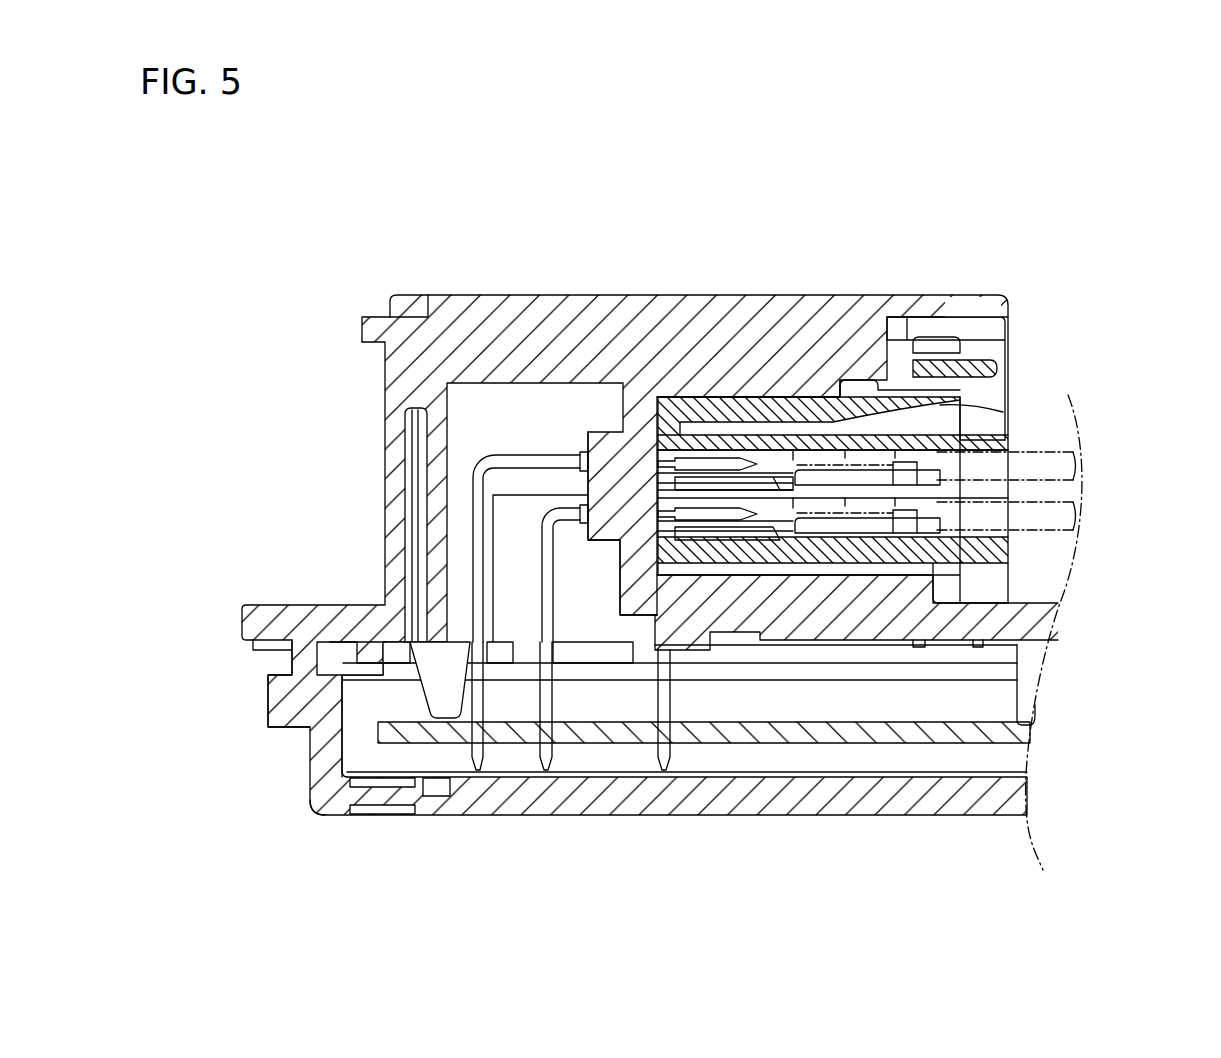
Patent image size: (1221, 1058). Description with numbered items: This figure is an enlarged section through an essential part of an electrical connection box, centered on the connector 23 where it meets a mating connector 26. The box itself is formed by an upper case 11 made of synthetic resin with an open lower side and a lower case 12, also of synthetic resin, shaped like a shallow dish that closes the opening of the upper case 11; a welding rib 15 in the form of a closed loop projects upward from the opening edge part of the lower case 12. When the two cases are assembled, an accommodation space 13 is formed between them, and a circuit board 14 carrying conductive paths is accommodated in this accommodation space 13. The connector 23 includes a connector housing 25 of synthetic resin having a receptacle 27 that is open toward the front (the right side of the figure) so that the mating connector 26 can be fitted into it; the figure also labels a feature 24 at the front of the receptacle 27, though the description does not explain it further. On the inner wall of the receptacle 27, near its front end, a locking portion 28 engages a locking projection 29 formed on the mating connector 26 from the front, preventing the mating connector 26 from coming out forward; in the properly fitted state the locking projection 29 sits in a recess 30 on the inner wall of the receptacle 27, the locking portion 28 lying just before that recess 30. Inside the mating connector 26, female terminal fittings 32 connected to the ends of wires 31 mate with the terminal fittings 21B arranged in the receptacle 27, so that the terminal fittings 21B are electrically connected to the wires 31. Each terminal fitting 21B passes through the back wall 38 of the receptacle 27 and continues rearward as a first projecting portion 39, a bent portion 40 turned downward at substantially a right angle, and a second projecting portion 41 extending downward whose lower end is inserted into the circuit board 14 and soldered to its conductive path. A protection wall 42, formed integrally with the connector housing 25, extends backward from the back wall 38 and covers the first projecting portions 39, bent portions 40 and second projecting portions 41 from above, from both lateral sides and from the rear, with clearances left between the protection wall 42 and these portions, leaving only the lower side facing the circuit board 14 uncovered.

The upper case 11 is at (262, 612).
The lower case 12 is at (878, 800).
The accommodation space 13 is at (352, 692).
The circuit board 14 is at (782, 735).
The welding rib 15 is at (310, 661).
The terminal fitting 21B is at (720, 520).
The connector 23 is at (703, 387).
The socket opening 24 is at (997, 410).
The connector housing 25 is at (793, 383).
The mating connector 26 is at (945, 445).
The receptacle 27 is at (737, 603).
The locking portion 28 is at (908, 383).
The locking projection 29 is at (877, 383).
The recess 30 is at (845, 387).
The wire 31 is at (1083, 510).
The female terminal fitting 32 is at (960, 437).
The back wall 38 is at (638, 407).
The first projecting portion 39 is at (572, 512).
The bent portion 40 is at (477, 465).
The second projecting portion 41 is at (543, 697).
The protection wall 42 is at (530, 373).